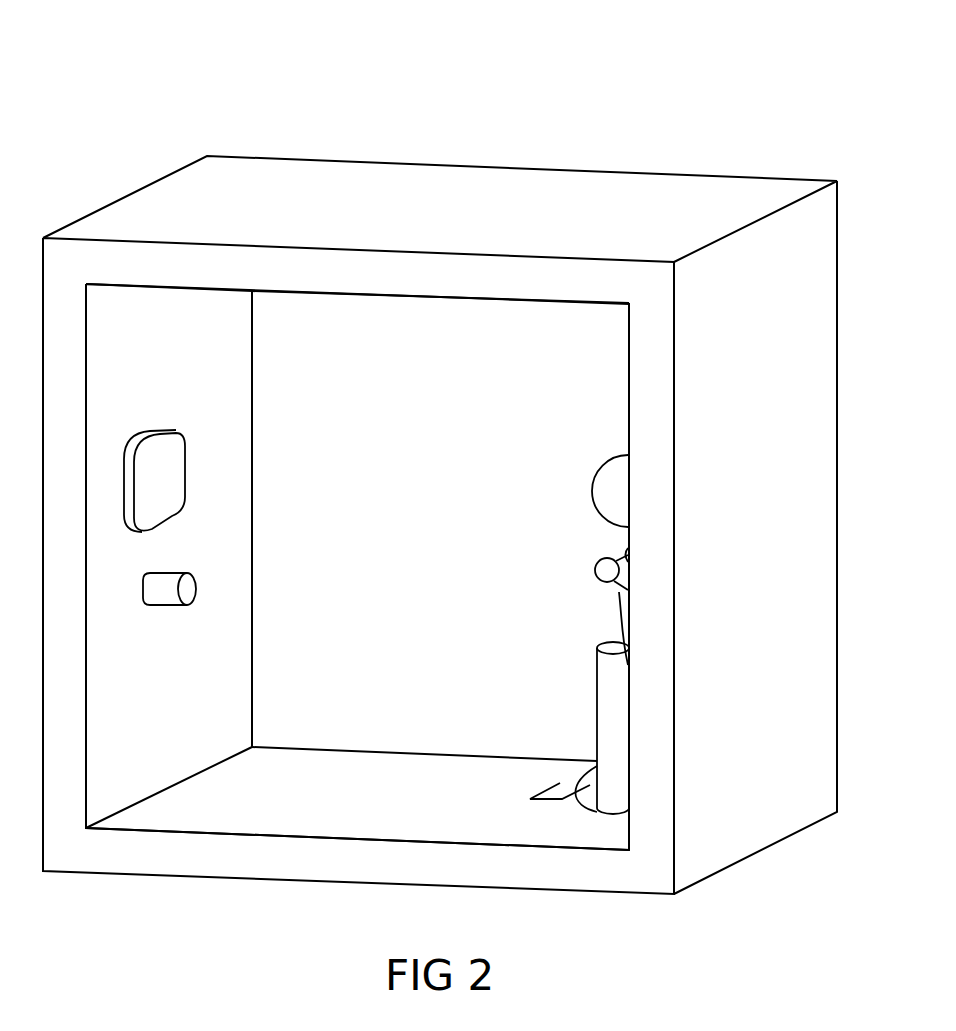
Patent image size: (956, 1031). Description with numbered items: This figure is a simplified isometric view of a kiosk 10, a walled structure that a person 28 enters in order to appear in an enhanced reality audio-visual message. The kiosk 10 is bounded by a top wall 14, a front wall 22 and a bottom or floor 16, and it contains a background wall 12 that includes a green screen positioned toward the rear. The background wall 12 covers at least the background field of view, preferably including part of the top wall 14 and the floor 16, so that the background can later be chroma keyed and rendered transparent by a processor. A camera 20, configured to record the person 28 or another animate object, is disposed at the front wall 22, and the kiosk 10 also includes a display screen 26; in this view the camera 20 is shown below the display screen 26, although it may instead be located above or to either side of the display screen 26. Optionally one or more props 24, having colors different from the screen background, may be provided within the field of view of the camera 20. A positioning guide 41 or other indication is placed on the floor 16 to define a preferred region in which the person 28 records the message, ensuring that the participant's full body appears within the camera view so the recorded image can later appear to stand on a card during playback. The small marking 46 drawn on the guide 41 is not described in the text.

The kiosk 10 is at (570, 110).
The background wall 12 is at (434, 756).
The top wall 14 is at (403, 295).
The floor 16 is at (320, 760).
The camera 20 is at (192, 589).
The front wall 22 is at (240, 517).
The prop 24 is at (597, 683).
The display screen 26 is at (163, 482).
The person 28 is at (597, 492).
The positioning guide 41 is at (507, 827).
The slot 46 is at (542, 800).